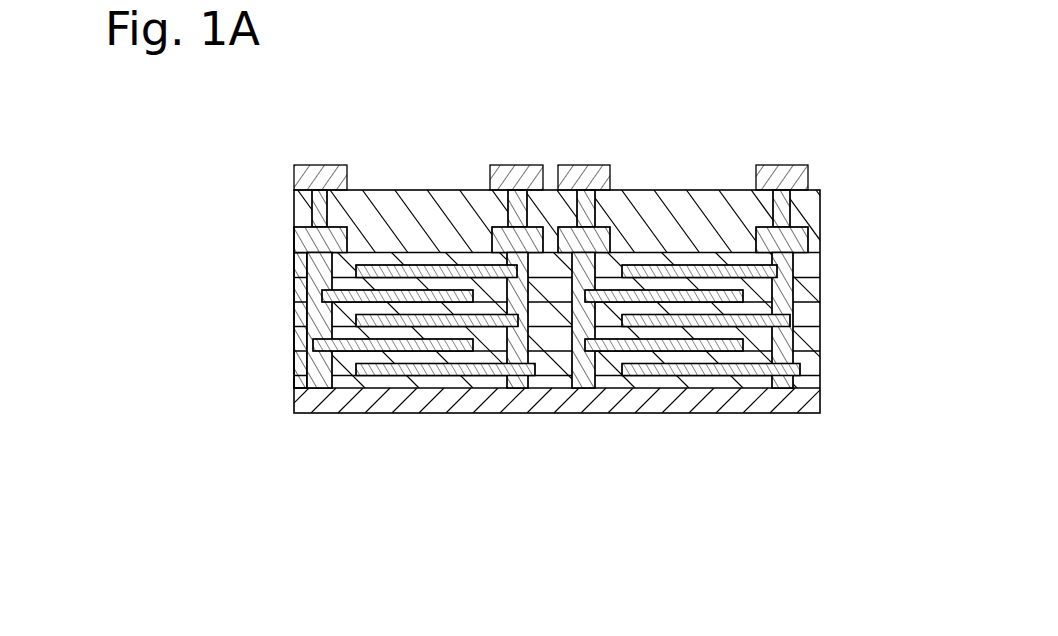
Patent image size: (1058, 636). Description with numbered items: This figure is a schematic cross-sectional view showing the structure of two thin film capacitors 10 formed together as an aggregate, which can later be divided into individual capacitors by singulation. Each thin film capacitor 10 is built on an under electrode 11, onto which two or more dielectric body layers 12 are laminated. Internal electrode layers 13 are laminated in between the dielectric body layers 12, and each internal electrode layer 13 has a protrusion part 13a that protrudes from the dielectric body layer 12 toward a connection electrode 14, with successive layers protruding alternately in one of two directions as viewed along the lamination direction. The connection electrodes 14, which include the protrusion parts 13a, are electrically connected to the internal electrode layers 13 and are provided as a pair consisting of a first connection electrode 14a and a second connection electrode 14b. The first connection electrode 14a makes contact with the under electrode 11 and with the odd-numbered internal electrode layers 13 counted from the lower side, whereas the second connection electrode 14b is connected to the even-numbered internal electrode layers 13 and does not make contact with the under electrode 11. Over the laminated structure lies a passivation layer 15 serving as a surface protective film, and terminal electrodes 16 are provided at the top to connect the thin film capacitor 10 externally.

The thin film capacitor 10 is at (441, 74).
The under electrode 11 is at (821, 397).
The dielectric body layer 12 is at (295, 265).
The internal electrode layer 13 is at (668, 268).
The protrusion part 13a is at (797, 264).
The connection electrode 14 is at (551, 181).
The first connection electrode 14a is at (600, 257).
The second connection electrode 14b is at (770, 256).
The passivation layer 15 is at (408, 192).
The terminal electrode 16 is at (576, 166).